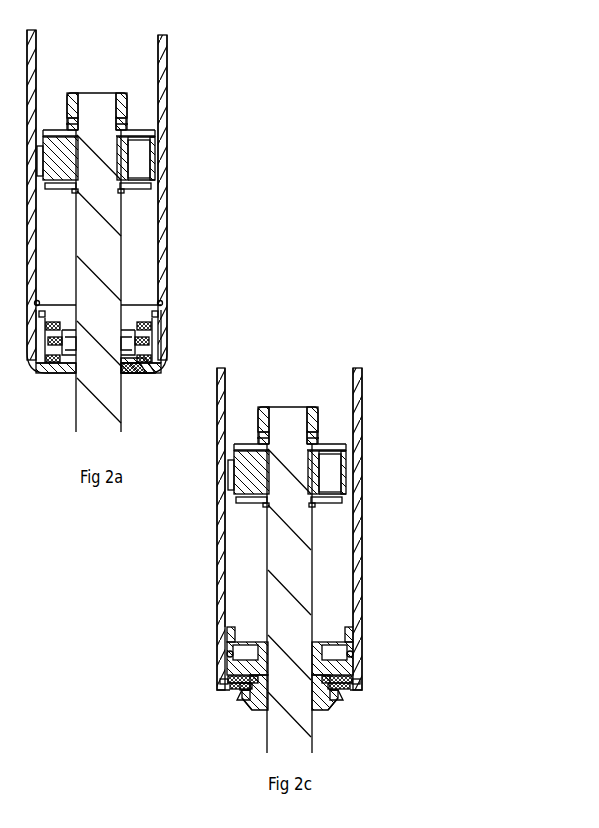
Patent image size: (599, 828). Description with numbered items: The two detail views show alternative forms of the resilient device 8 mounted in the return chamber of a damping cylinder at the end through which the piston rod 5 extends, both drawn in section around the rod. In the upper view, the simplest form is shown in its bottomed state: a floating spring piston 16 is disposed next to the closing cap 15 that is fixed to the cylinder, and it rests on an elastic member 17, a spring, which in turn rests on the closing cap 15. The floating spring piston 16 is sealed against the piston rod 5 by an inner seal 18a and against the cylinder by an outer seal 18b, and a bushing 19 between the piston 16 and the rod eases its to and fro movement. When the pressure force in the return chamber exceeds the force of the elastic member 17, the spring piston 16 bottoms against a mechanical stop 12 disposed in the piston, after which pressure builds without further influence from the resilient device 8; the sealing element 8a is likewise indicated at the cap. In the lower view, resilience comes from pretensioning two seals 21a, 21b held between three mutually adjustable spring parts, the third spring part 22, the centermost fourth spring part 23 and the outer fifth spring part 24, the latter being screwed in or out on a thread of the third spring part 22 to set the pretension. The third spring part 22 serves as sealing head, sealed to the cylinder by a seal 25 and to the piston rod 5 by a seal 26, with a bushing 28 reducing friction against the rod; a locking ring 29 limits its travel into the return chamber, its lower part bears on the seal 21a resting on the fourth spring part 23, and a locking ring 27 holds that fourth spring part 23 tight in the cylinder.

In FIG. 2C, the piston rod 5 is at (292, 527).
In FIG. 2A, the resilient device 8 is at (152, 361).
In FIG. 2A, the sealing element 8a is at (142, 364).
In FIG. 2C, the sealing element 8a is at (242, 690).
In FIG. 2A, the mechanical stop 12 is at (160, 331).
In FIG. 2A, the closing cap 15 is at (158, 352).
In FIG. 2A, the floating spring piston 16 is at (139, 309).
In FIG. 2A, the elastic member 17 is at (138, 334).
In FIG. 2A, the inner seal 18a is at (162, 304).
In FIG. 2A, the outer seal 18b is at (220, 274).
In FIG. 2A, the bushing 19 is at (131, 305).
In FIG. 2C, the seal 21a is at (344, 683).
In FIG. 2C, the lower seal 21b is at (338, 668).
In FIG. 2C, the third spring part 22 is at (351, 647).
In FIG. 2C, the fourth spring part 23 is at (347, 688).
In FIG. 2C, the fifth spring part 24 is at (341, 692).
In FIG. 2C, the seal 25 is at (353, 659).
In FIG. 2C, the seal 26 is at (337, 696).
In FIG. 2C, the locking ring 27 is at (358, 682).
In FIG. 2C, the bushing 28 is at (340, 620).
In FIG. 2C, the locking ring 29 is at (350, 630).